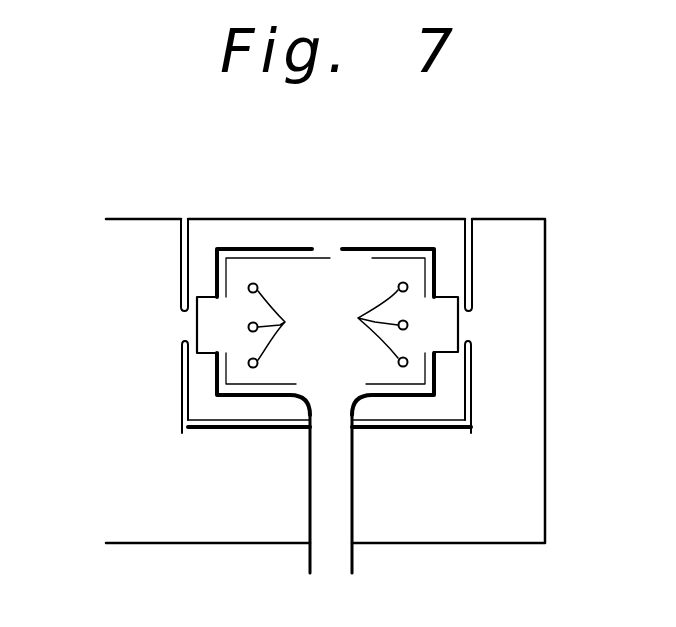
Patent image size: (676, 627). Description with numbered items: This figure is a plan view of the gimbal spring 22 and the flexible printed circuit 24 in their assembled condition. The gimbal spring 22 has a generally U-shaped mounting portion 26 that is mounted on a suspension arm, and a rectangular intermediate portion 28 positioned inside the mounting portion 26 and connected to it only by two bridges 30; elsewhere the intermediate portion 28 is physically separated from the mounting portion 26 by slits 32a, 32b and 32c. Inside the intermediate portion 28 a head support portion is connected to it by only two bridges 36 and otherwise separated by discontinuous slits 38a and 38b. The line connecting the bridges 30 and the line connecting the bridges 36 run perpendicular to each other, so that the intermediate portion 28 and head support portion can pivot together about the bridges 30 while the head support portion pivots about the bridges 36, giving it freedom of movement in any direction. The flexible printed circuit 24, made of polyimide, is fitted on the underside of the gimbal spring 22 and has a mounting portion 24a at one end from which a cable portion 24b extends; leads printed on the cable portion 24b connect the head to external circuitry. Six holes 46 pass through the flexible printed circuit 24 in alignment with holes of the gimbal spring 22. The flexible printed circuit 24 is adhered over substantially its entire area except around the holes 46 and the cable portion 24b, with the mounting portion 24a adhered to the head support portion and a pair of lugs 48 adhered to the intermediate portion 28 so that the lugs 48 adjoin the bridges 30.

The gimbal spring 22 is at (553, 413).
The flexible printed circuit 24 is at (355, 474).
The mounting portion 24a is at (367, 280).
The cable portion 24b is at (317, 510).
The mounting portion 26 is at (537, 503).
The intermediate portion 28 is at (453, 260).
The bridges 30 is at (187, 328).
The slit 32a is at (473, 235).
The slit 32b is at (452, 432).
The slit 32c is at (180, 268).
The bridges 36 is at (330, 250).
The slit 38a is at (440, 373).
The slit 38b is at (182, 433).
The holes 46 is at (328, 325).
The lugs 48 is at (207, 357).